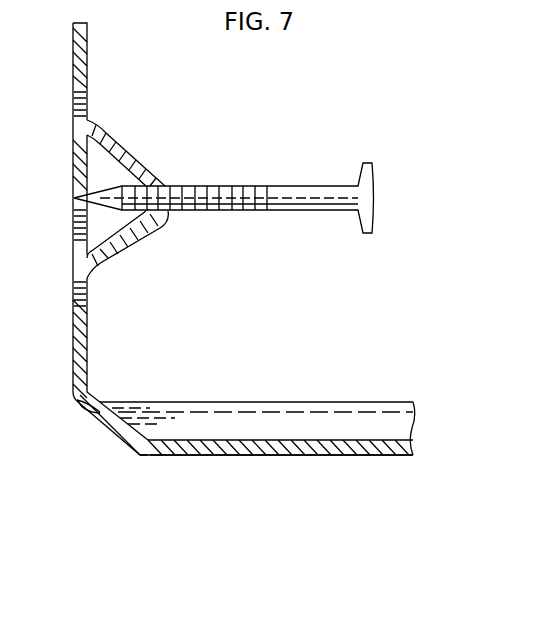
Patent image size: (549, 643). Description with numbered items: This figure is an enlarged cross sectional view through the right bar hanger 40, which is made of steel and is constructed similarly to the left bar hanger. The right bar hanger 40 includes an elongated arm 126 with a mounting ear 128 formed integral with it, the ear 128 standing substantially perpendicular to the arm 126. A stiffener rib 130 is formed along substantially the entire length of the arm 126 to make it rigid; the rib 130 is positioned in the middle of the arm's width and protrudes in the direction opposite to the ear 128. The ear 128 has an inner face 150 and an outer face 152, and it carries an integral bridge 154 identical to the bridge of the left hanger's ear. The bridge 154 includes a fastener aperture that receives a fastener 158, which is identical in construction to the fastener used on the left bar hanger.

The right bar hanger 40 is at (325, 398).
The elongated arm 126 is at (275, 405).
The mounting ear 128 is at (77, 357).
The stiffener rib 130 is at (280, 454).
The inner face 150 is at (87, 330).
The outer face 152 is at (73, 55).
The bridge 154 is at (113, 148).
The fastener 158 is at (378, 180).